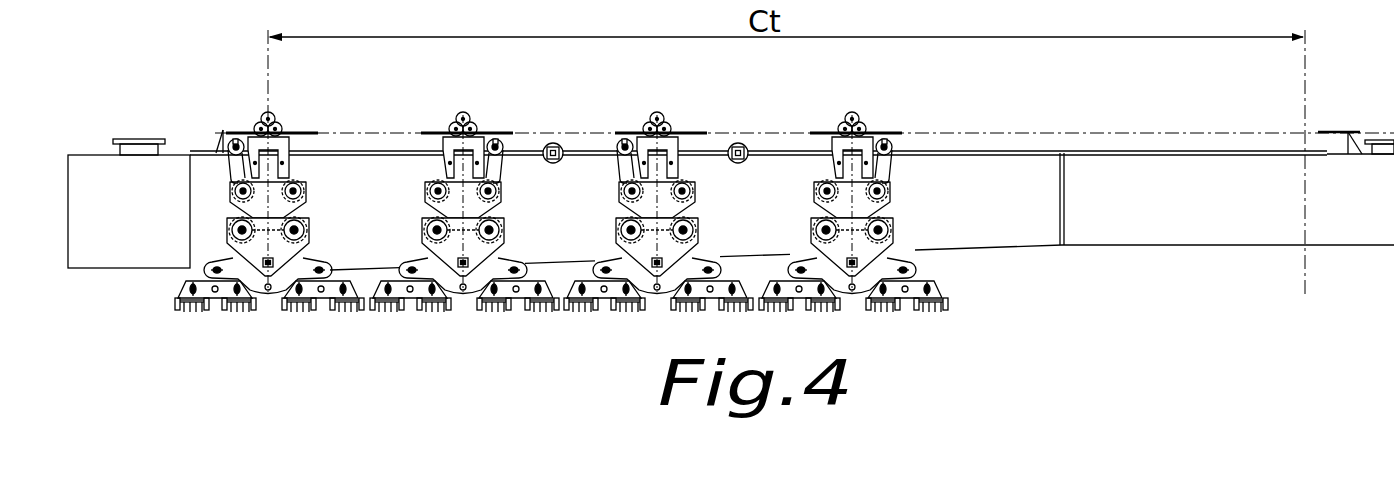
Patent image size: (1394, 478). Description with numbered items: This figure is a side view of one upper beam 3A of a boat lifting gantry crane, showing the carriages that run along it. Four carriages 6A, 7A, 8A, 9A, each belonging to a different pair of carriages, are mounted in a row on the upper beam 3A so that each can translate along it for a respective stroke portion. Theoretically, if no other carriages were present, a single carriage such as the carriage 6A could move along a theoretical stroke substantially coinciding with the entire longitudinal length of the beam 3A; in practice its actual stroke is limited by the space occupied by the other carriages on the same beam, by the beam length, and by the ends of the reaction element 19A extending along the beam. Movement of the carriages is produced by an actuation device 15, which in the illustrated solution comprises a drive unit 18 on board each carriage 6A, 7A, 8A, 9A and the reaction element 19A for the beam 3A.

The upper beam 3A is at (1127, 202).
The carriage 6A is at (273, 140).
The carriage 7A is at (472, 143).
The carriage 8A is at (663, 145).
The carriage 9A is at (857, 143).
The actuation device 15 is at (255, 110).
The drive unit 18 is at (271, 114).
The reaction element 19A is at (1028, 128).